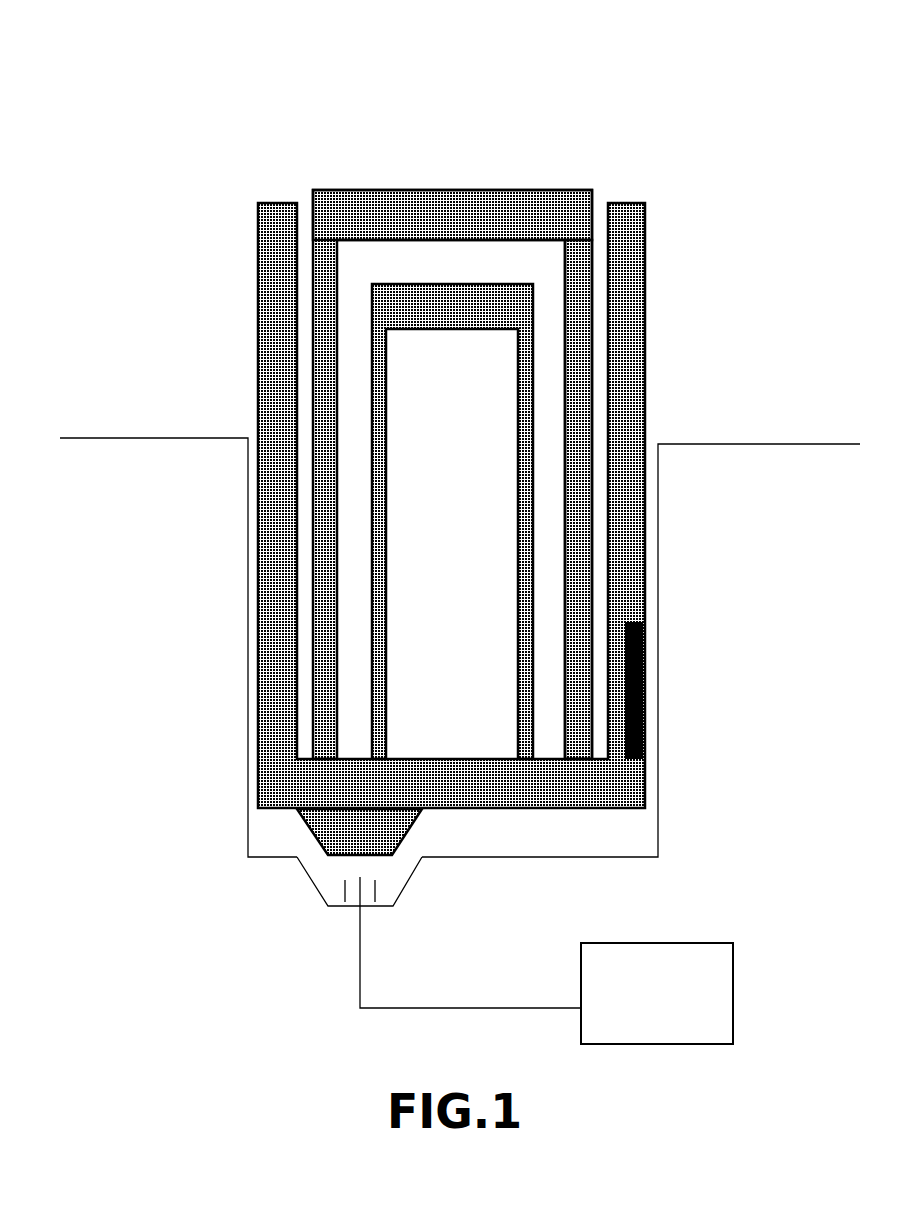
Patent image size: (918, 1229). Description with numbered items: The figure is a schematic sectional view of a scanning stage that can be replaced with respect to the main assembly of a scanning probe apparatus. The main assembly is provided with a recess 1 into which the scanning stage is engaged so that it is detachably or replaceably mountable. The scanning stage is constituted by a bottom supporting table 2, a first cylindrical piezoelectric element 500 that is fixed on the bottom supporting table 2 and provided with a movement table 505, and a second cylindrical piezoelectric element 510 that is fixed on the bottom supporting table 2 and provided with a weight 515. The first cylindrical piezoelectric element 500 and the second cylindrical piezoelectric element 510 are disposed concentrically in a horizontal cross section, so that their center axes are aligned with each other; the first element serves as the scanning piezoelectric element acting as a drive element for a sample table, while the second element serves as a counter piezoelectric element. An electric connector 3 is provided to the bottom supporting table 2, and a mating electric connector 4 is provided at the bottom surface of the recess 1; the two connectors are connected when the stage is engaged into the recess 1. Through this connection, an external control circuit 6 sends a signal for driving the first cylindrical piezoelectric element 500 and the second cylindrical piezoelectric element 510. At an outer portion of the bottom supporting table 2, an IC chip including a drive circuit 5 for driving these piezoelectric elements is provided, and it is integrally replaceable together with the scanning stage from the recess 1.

The recess 1 is at (248, 520).
The bottom supporting table 2 is at (260, 332).
The electric connector 3 is at (318, 840).
The electric connector 4 is at (327, 902).
The drive circuit 5 is at (643, 670).
The control circuit 6 is at (693, 942).
The first cylindrical piezoelectric element 500 is at (590, 348).
The movement table 505 is at (438, 192).
The second cylindrical piezoelectric element 510 is at (387, 507).
The weight 515 is at (572, 192).